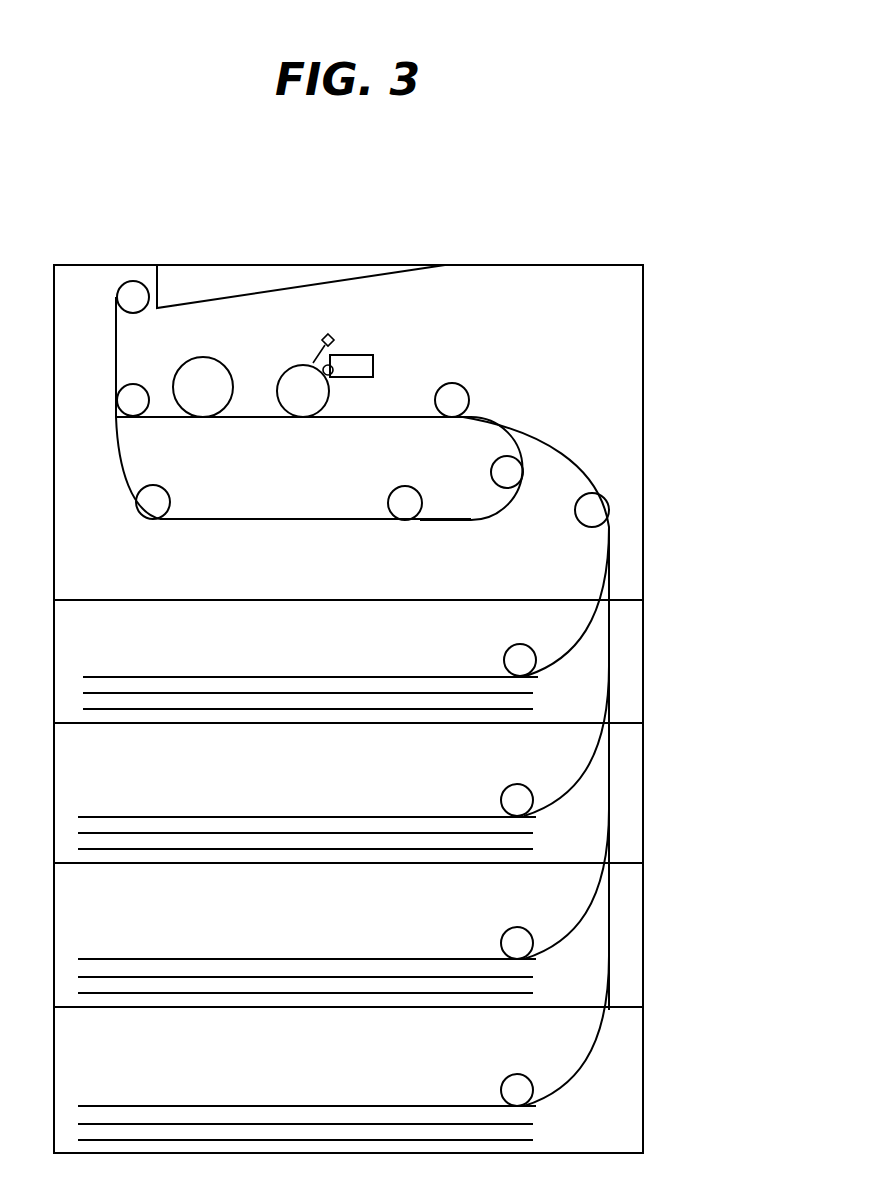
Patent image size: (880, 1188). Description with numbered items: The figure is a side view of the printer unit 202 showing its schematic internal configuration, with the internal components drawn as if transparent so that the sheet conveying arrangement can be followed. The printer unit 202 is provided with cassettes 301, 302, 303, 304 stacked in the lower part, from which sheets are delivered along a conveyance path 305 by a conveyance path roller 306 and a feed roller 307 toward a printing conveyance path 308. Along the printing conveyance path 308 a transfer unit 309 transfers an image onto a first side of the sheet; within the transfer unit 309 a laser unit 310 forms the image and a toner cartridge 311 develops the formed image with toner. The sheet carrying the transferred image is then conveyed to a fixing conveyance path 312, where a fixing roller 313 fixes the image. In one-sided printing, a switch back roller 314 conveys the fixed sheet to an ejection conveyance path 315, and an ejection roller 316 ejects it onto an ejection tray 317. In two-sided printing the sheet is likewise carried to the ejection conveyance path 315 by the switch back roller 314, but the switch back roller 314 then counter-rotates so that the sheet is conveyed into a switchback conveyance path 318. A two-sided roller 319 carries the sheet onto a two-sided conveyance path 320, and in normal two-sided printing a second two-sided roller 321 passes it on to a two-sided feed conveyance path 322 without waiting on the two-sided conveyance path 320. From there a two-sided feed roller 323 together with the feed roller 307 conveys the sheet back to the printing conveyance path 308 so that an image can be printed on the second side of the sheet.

The printer unit 202 is at (597, 264).
The cassette 301 is at (643, 645).
The cassette 302 is at (643, 795).
The cassette 303 is at (643, 918).
The cassette 304 is at (643, 1063).
The conveyance path 305 is at (609, 558).
The conveyance path roller 306 is at (575, 515).
The feed roller 307 is at (450, 383).
The printing conveyance path 308 is at (395, 416).
The transfer unit 309 is at (291, 367).
The laser unit 310 is at (328, 332).
The toner cartridge 311 is at (365, 355).
The fixing conveyance path 312 is at (255, 414).
The fixing roller 313 is at (203, 357).
The switch back roller 314 is at (131, 383).
The ejection conveyance path 315 is at (116, 363).
The ejection roller 316 is at (132, 281).
The ejection tray 317 is at (378, 274).
The switchback conveyance path 318 is at (118, 462).
The two-sided roller 319 is at (153, 486).
The two-sided conveyance path 320 is at (260, 518).
The two-sided roller 321 is at (393, 487).
The two-sided feed conveyance path 322 is at (448, 518).
The two-sided feed roller 323 is at (491, 468).